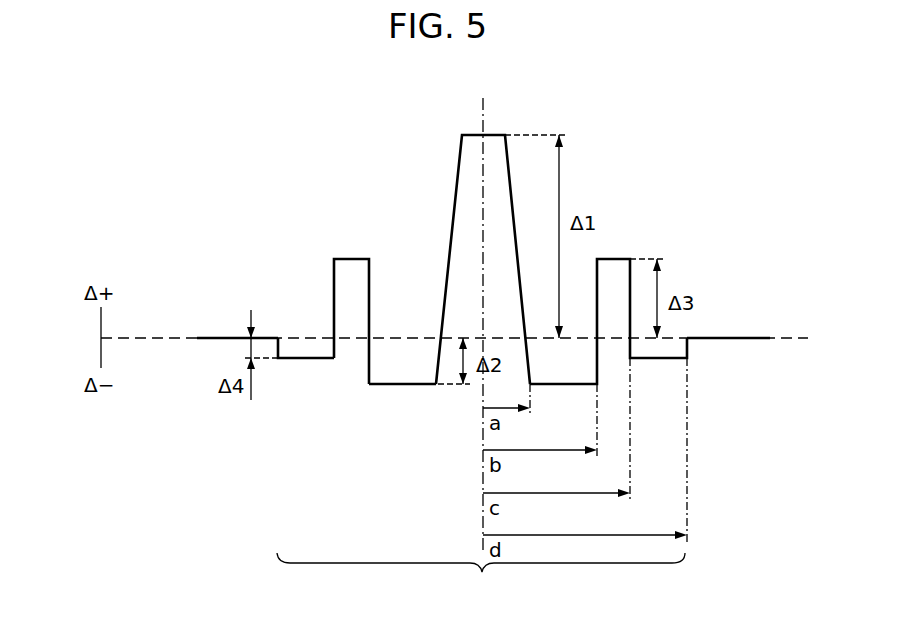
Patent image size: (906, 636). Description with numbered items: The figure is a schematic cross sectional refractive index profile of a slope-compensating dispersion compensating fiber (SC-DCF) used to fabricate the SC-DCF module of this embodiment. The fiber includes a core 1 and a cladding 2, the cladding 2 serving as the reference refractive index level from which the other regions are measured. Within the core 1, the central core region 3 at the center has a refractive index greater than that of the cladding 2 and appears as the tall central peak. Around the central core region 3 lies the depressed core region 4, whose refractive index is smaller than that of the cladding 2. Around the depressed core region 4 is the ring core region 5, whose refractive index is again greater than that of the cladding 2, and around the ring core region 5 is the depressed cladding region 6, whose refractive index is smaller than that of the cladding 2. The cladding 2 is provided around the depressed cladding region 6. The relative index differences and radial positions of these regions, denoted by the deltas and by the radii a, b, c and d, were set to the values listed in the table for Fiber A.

The core 1 is at (482, 430).
The cladding 2 is at (222, 348).
The central core region 3 is at (468, 160).
The depressed core region 4 is at (396, 384).
The ring core region 5 is at (347, 272).
The depressed cladding region 6 is at (302, 358).